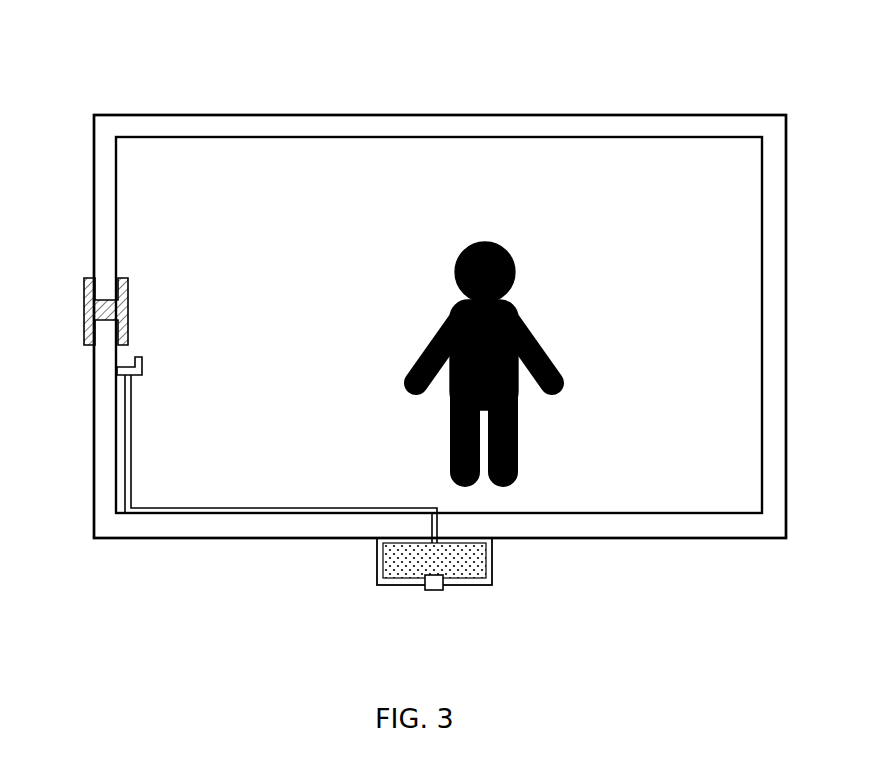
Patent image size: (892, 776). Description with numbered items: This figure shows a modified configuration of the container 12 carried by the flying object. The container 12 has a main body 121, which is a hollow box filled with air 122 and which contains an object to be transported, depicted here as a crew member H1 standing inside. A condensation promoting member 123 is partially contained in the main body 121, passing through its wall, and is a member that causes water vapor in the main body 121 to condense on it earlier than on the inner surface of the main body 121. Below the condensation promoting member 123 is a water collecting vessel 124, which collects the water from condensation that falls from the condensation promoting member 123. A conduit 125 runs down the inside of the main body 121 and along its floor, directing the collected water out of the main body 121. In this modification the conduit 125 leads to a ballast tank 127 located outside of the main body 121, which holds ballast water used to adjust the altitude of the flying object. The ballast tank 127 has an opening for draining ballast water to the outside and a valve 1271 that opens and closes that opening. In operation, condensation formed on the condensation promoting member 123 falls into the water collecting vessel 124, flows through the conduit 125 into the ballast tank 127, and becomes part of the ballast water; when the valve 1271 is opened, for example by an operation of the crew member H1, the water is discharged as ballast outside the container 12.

The container 12 is at (710, 77).
The main body 121 is at (371, 128).
The air 122 is at (357, 244).
The condensation promoting member 123 is at (128, 290).
The water collecting vessel 124 is at (145, 362).
The conduit 125 is at (128, 392).
The ballast tank 127 is at (492, 558).
The valve 1271 is at (432, 590).
The crew member H1 is at (485, 243).